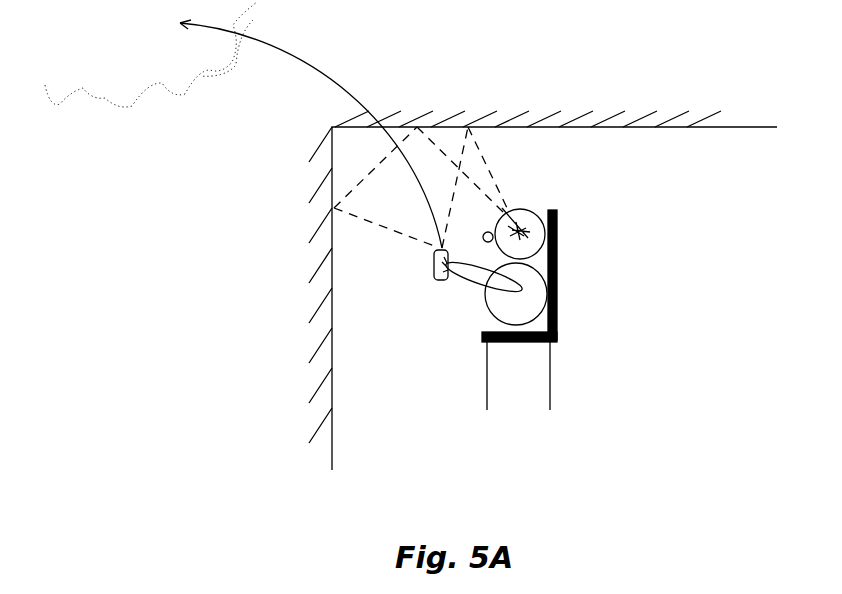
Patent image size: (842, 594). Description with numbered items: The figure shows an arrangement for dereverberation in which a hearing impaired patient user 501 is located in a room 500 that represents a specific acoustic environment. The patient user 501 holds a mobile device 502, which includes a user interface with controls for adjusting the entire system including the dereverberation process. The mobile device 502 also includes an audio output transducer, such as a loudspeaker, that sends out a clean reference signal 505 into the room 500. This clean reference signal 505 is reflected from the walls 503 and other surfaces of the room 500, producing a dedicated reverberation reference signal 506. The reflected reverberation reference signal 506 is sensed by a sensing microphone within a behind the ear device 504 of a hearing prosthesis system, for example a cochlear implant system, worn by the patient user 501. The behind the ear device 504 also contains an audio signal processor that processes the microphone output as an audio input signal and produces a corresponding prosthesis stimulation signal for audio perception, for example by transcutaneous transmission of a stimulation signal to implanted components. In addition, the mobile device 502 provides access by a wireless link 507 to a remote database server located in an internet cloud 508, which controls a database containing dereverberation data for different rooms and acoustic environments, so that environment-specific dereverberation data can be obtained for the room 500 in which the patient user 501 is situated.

The room 500 is at (682, 359).
The patient user 501 is at (537, 282).
The mobile device 502 is at (433, 282).
The walls 503 is at (602, 128).
The behind the ear (BTE) device 504 is at (538, 204).
The clean reference signal 505 is at (463, 242).
The reverberation reference signal 506 is at (481, 157).
The wireless link 507 is at (337, 88).
The internet cloud 508 is at (152, 39).